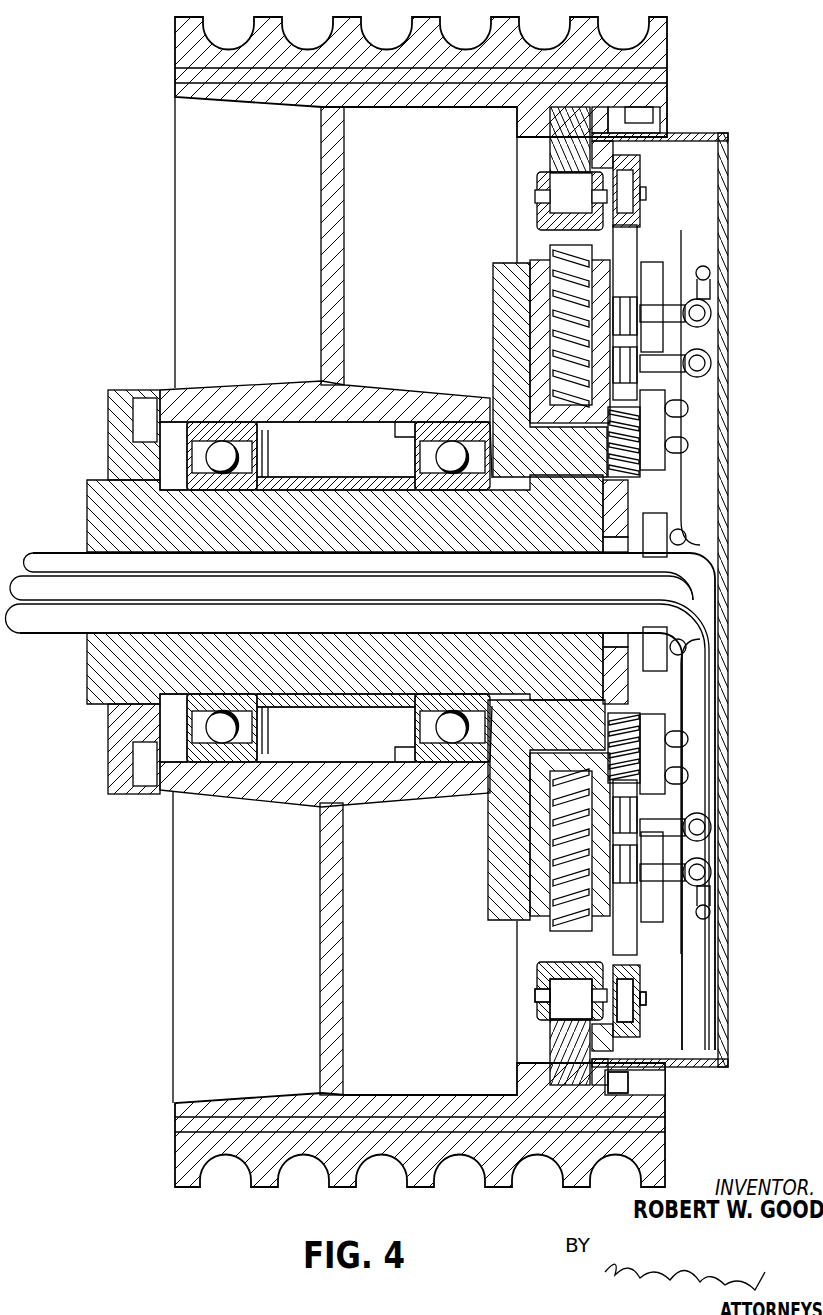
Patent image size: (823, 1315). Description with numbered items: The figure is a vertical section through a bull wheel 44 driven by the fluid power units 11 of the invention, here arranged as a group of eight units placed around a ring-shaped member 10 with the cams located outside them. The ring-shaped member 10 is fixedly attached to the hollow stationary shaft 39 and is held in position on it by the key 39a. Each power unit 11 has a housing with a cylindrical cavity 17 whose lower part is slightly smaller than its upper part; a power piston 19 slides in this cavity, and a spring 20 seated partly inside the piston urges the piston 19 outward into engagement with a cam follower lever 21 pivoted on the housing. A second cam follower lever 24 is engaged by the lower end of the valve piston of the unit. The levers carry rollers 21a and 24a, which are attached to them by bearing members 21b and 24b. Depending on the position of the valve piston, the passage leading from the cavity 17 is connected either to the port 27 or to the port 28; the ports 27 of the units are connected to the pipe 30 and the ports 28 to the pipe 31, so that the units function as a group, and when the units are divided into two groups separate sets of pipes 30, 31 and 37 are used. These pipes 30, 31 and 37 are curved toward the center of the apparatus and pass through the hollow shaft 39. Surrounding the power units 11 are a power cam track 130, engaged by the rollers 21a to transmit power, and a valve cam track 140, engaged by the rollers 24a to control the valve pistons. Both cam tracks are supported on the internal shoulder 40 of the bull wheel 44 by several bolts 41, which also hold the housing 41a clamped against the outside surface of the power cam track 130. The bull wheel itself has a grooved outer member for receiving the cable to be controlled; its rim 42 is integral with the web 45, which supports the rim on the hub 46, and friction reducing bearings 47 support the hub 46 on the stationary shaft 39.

The ring-shaped member 10 is at (493, 372).
The power units 11 is at (648, 270).
The cylindrical cavity 17 is at (548, 793).
The power piston 19 is at (548, 860).
The spring 20 is at (560, 812).
The cam follower lever 21 is at (543, 218).
The roller 21a is at (560, 1005).
The bearing member 21b is at (535, 995).
The cam follower lever 24 is at (641, 220).
The roller 24a is at (633, 1018).
The bearing member 24b is at (646, 1000).
The port 27 is at (668, 818).
The port 28 is at (655, 885).
The pipe 30 is at (718, 356).
The pipe 31 is at (718, 295).
The pipe 37 is at (718, 275).
The hollow shaft 39 is at (448, 675).
The key 39a is at (490, 508).
The internal shoulder 40 is at (525, 1082).
The bolts 41 is at (629, 1084).
The cover 41a is at (731, 890).
The rim 42 is at (165, 171).
The bull wheel 44 is at (657, 52).
The web 45 is at (346, 310).
The hub 46 is at (392, 392).
The friction reducing bearings 47 is at (232, 445).
The power cam track 130 is at (550, 158).
The valve cam track 140 is at (633, 158).